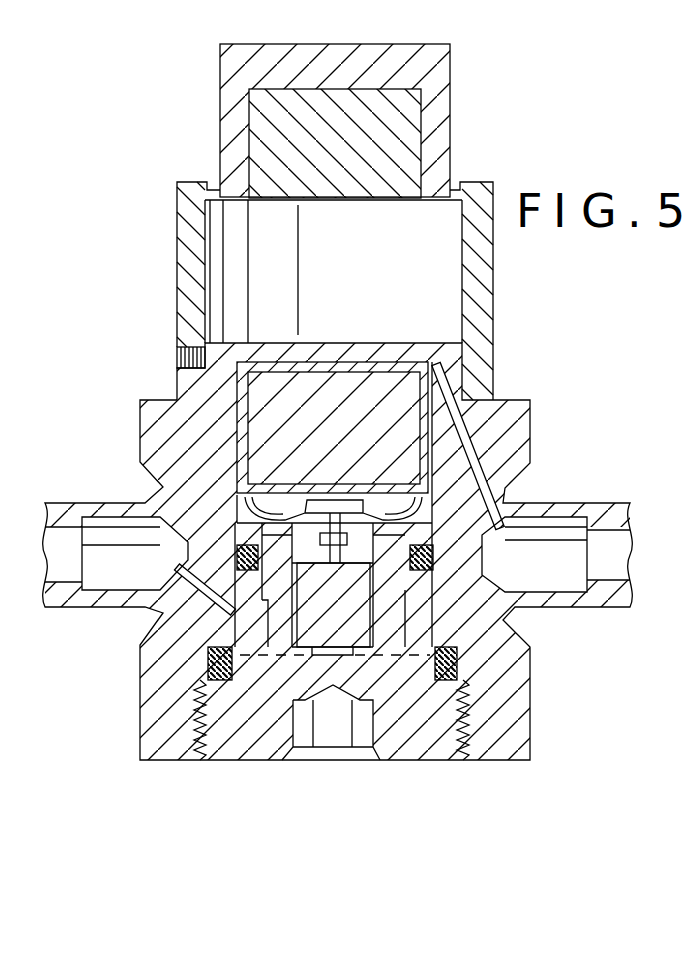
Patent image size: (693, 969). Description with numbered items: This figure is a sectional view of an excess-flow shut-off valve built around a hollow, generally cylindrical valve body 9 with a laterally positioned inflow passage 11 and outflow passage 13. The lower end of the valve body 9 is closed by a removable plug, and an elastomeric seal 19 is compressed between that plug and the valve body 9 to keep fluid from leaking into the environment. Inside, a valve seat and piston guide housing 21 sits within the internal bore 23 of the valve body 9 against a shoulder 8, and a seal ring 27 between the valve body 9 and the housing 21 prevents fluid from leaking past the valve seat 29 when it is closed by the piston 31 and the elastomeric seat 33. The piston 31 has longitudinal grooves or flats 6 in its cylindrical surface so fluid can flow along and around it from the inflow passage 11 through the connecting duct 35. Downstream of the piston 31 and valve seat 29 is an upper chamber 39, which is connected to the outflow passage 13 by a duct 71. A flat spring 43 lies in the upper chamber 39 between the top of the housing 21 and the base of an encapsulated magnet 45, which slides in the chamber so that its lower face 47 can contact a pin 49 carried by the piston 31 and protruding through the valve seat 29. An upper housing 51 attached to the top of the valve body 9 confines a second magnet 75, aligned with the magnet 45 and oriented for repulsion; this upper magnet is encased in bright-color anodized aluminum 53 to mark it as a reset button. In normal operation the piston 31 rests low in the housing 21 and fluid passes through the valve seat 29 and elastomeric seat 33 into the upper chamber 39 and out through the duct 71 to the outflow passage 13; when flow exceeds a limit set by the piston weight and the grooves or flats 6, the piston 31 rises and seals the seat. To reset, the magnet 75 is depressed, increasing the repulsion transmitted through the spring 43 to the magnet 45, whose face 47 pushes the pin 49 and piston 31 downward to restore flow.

The longitudinal grooves or flats 6 is at (372, 607).
The shoulder 8 is at (433, 512).
The valve body 9 is at (527, 692).
The inflow passage 11 is at (105, 532).
The outflow passage 13 is at (567, 577).
The elastomeric seal 19 is at (210, 662).
The valve seat and piston guide housing 21 is at (388, 635).
The internal bore 23 is at (245, 503).
The seal ring 27 is at (448, 560).
The valve seat 29 is at (347, 540).
The piston 31 is at (355, 623).
The elastomeric seat 33 is at (258, 533).
The connecting duct 35 is at (190, 587).
The upper chamber 39 is at (532, 420).
The flat spring 43 is at (397, 503).
The magnet 45 is at (403, 397).
The lower face 47 is at (300, 500).
The pin 49 is at (345, 560).
The upper housing 51 is at (482, 293).
The bright-color anodized aluminum 53 is at (437, 158).
The duct 71 is at (473, 470).
The magnet 75 is at (403, 115).